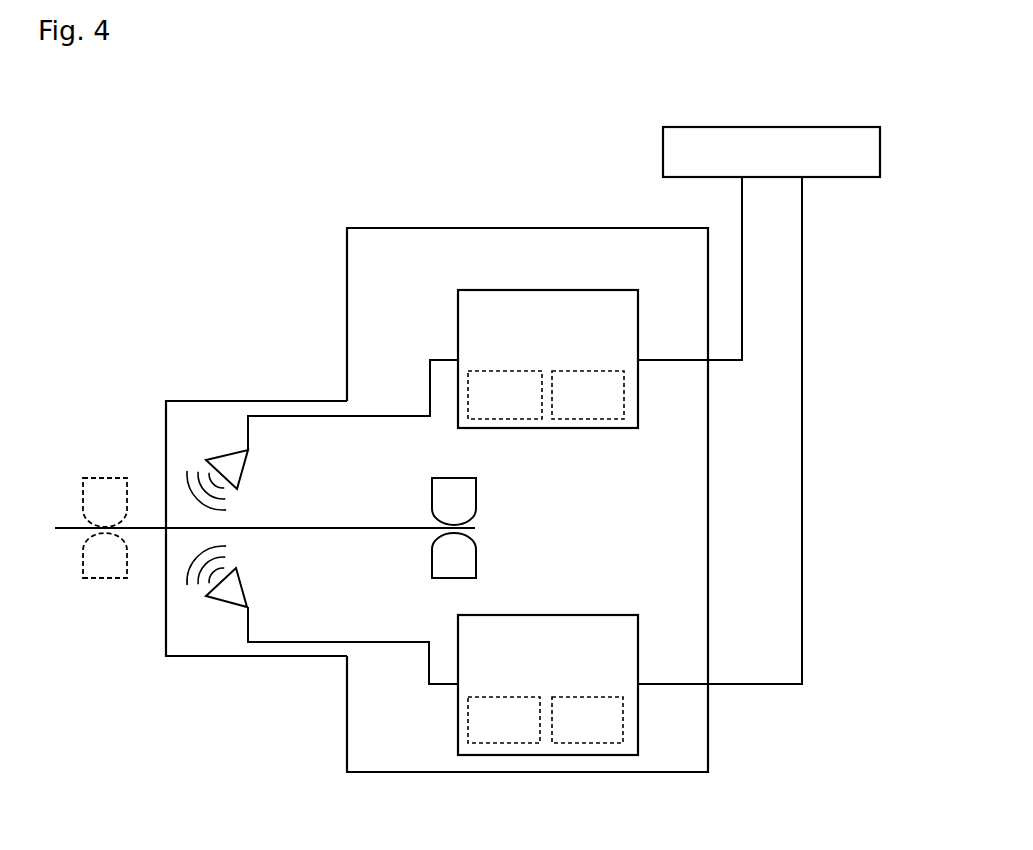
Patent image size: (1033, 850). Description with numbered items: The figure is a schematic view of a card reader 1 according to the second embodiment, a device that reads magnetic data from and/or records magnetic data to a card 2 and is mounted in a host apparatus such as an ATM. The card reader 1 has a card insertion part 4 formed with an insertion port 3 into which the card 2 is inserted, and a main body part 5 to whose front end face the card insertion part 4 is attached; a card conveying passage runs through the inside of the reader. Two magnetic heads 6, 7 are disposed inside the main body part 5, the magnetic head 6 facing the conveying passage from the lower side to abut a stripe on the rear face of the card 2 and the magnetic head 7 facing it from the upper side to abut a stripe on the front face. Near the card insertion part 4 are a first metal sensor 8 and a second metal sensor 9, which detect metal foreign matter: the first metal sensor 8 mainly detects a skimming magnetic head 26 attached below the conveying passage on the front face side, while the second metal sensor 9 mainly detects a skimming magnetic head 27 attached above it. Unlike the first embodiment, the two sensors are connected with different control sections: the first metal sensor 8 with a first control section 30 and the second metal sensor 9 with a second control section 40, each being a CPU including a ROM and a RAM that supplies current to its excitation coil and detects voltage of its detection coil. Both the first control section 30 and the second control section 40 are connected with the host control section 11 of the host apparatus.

The card reader 1 is at (383, 227).
The card 2 is at (67, 526).
The insertion port 3 is at (163, 534).
The card insertion part 4 is at (227, 401).
The main body part 5 is at (556, 227).
The magnetic head 6 is at (477, 560).
The magnetic head 7 is at (477, 503).
The first metal sensor 8 is at (245, 585).
The second metal sensor 9 is at (245, 472).
The host control section 11 is at (775, 127).
The skimming magnetic head 26 is at (103, 578).
The skimming magnetic head 27 is at (105, 478).
The first control section 30 is at (602, 614).
The second control section 40 is at (595, 290).